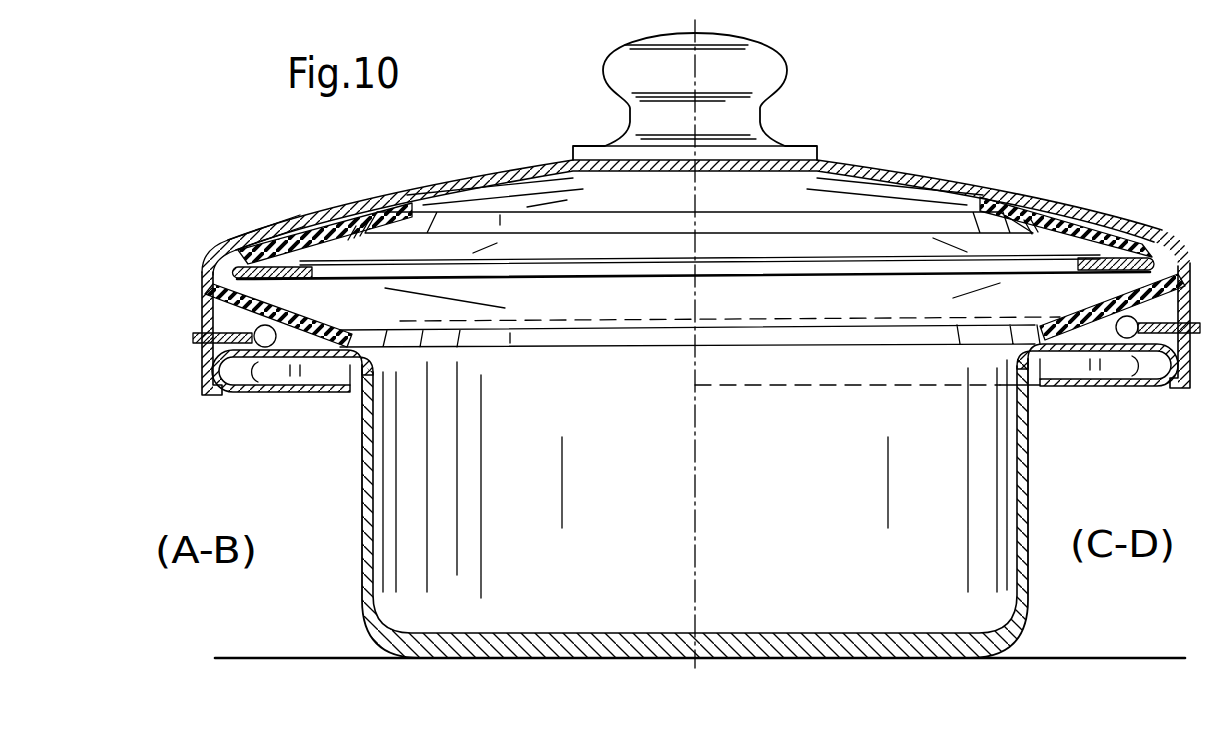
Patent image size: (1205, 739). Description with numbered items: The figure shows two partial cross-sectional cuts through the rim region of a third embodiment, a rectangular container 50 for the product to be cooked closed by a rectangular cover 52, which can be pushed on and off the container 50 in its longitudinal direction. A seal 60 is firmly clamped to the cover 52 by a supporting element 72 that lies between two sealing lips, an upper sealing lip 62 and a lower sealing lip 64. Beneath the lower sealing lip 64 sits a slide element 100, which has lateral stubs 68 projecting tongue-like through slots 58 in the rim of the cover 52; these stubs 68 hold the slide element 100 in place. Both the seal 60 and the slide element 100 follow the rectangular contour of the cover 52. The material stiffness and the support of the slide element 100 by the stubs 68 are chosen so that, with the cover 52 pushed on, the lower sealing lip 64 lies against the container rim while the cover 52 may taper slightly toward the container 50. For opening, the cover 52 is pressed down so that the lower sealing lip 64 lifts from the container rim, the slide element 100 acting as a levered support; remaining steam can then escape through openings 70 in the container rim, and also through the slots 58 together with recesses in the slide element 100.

The container 50 is at (363, 463).
The cover 52 is at (468, 175).
The slots 58 is at (207, 324).
The seal 60 is at (232, 252).
The upper sealing lip 62 is at (340, 227).
The lower sealing lip 64 is at (316, 322).
The lateral stubs 68 is at (195, 338).
The openings 70 is at (1102, 350).
The supporting element 72 is at (1087, 262).
The slide element 100 is at (266, 348).